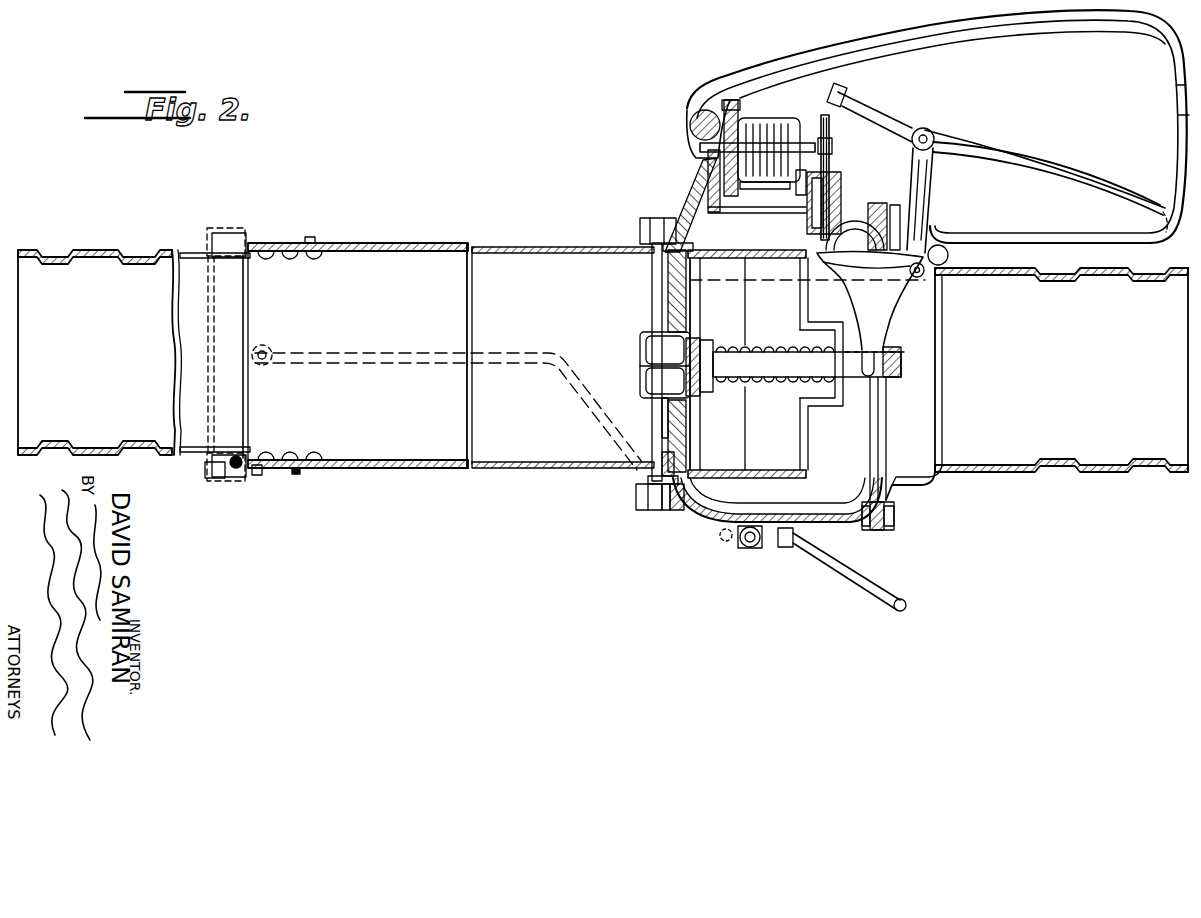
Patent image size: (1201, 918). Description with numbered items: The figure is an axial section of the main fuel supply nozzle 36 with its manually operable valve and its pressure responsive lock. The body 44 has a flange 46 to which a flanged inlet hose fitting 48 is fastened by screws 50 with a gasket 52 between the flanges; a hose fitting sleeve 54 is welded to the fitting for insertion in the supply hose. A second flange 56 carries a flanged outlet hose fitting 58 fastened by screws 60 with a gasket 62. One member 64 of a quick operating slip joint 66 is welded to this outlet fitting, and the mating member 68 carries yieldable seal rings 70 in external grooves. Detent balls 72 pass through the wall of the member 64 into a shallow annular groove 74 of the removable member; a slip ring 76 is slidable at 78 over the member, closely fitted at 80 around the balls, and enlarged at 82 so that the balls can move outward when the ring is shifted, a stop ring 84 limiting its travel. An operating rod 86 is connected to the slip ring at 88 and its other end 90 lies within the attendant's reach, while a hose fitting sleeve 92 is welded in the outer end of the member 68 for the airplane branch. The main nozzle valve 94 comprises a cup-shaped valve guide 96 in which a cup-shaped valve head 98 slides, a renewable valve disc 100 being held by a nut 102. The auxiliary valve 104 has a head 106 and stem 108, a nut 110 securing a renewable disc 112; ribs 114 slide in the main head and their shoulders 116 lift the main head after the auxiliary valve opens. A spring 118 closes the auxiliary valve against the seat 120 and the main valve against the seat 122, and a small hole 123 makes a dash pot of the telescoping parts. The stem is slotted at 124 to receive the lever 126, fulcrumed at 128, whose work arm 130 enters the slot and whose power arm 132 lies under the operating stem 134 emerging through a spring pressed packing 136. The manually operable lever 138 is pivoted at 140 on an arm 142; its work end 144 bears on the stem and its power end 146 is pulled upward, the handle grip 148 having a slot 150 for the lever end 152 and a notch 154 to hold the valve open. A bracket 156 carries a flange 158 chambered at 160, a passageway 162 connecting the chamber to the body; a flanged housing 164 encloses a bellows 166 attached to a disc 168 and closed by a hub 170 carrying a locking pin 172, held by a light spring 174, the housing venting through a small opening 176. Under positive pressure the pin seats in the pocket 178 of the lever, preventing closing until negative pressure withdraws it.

The main fuel supply nozzle 36 is at (626, 230).
The body 44 is at (702, 522).
The flange 46 is at (866, 530).
The flanged inlet hose fitting 48 is at (924, 480).
The screws 50 is at (895, 518).
The gasket 52 is at (880, 530).
The hose fitting sleeve 54 is at (1066, 470).
The flange 56 is at (678, 510).
The flanged outlet hose fitting 58 is at (662, 506).
The screws 60 is at (636, 500).
The gasket 62 is at (645, 482).
The member of slip joint 64 is at (490, 468).
The quick operating slip joint 66 is at (392, 482).
The mating member 68 is at (350, 460).
The yieldable seal rings 70 is at (308, 458).
The detent balls 72 is at (246, 468).
The shallow annular groove 74 is at (236, 462).
The slip ring 76 is at (272, 468).
The slip ring internal diameter portion 78 is at (268, 460).
The slip ring internal diameter portion 80 is at (244, 470).
The slip ring internal diameter portion 82 is at (210, 475).
The stop ring 84 is at (300, 474).
The operating rod 86 is at (420, 352).
The connection of operating rod to slip ring 88 is at (272, 350).
The other end of operating rod 90 is at (907, 602).
The hose fitting sleeve 92 is at (146, 256).
The main nozzle valve 94 is at (634, 315).
The cup-shaped valve guide 96 is at (766, 478).
The cup-shaped valve head 98 is at (706, 476).
The renewable valve disc 100 is at (686, 438).
The nut 102 is at (654, 420).
The auxiliary valve 104 is at (626, 358).
The head 106 is at (646, 378).
The stem 108 is at (760, 385).
The nut 110 is at (706, 392).
The renewable disc 112 is at (710, 342).
The ribs 114 is at (665, 381).
The shoulders 116 is at (665, 350).
The spring 118 is at (770, 390).
The seat 120 is at (692, 338).
The seat 122 is at (668, 270).
The small hole 123 is at (806, 422).
The slot 124 is at (888, 385).
The lever 126 is at (888, 328).
The fulcrum 128 is at (914, 285).
The work arm 130 is at (888, 348).
The power arm 132 is at (800, 265).
The operating stem 134 is at (830, 240).
The spring pressed packing 136 is at (807, 222).
The manually operable lever 138 is at (1012, 136).
The pivot 140 is at (934, 130).
The arm 142 is at (930, 196).
The work end 144 is at (850, 96).
The power end 146 is at (1080, 160).
The handle grip 148 is at (1085, 38).
The slot 150 is at (1180, 116).
The end of manual lever 152 is at (1164, 222).
The notch 154 is at (1176, 88).
The bracket 156 is at (690, 200).
The flange 158 is at (730, 100).
The chamber 160 is at (700, 98).
The passageway 162 is at (712, 212).
The flanged housing 164 is at (742, 116).
The bellows 166 is at (792, 120).
The disc 168 is at (738, 100).
The hub 170 is at (780, 142).
The locking pin 172 is at (829, 158).
The light spring 174 is at (764, 192).
The small opening 176 is at (780, 190).
The pocket 178 is at (842, 82).